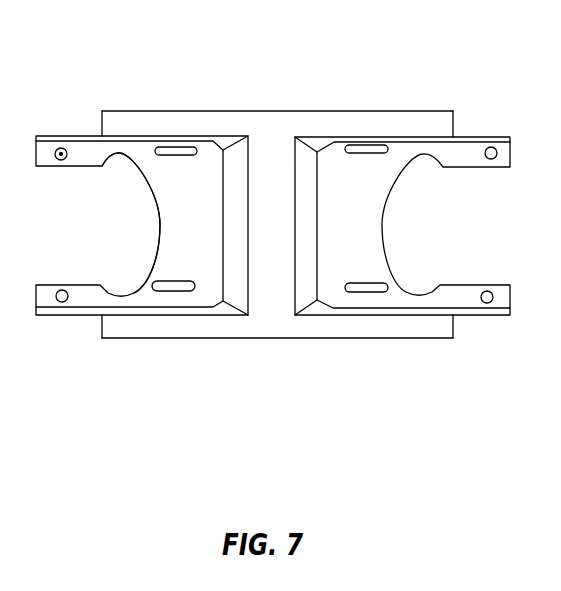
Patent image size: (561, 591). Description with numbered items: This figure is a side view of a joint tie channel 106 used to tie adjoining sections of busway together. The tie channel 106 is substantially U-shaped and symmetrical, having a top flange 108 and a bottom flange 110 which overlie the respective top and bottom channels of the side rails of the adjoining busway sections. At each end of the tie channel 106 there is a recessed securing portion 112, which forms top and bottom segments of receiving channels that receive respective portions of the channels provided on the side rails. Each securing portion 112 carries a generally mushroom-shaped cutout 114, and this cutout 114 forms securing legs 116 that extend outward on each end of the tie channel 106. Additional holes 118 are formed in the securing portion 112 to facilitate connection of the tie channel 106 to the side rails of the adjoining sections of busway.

The joint tie channel 106 is at (342, 100).
The top flange 108 is at (289, 111).
The bottom flange 110 is at (267, 338).
The recessed securing portion 112 is at (182, 193).
The mushroom-shaped cutout 114 is at (150, 187).
The securing legs 116 is at (70, 296).
The holes 118 is at (61, 154).